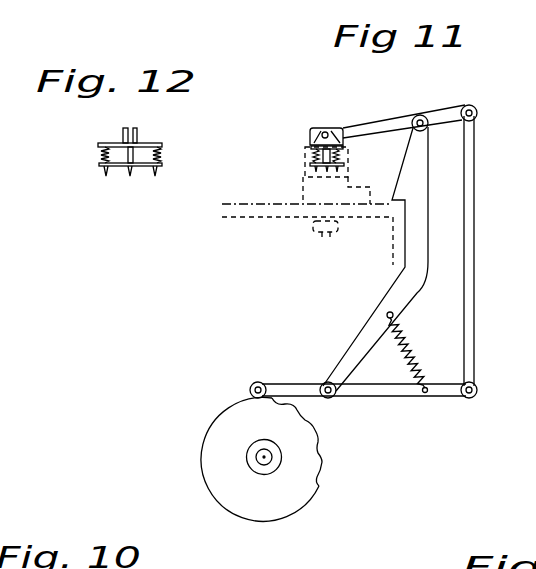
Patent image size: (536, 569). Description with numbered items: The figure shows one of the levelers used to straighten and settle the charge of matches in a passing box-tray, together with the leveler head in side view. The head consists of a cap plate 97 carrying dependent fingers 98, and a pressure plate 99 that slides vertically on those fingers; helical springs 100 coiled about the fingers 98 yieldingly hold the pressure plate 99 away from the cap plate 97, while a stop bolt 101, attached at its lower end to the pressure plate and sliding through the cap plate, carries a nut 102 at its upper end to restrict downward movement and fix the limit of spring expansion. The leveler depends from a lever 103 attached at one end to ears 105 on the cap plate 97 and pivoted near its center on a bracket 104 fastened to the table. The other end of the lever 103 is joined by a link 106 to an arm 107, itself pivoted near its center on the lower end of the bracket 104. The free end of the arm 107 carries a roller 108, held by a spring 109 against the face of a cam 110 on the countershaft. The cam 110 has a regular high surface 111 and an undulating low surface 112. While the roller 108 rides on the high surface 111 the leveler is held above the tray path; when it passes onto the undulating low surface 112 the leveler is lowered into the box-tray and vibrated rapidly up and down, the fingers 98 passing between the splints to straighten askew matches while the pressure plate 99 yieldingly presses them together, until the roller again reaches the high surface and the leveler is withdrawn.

In FIG. 12, the cap plate 97 is at (143, 141).
In FIG. 11, the cap plate 97 is at (339, 131).
In FIG. 12, the fingers 98 is at (130, 174).
In FIG. 11, the fingers 98 is at (338, 171).
In FIG. 12, the pressure plate 99 is at (163, 164).
In FIG. 11, the pressure plate 99 is at (345, 165).
In FIG. 12, the helical springs 100 is at (100, 153).
In FIG. 11, the helical springs 100 is at (312, 152).
In FIG. 11, the stop bolt 101 is at (318, 157).
In FIG. 11, the nut 102 is at (318, 129).
In FIG. 11, the lever 103 is at (447, 118).
In FIG. 11, the bracket 104 is at (398, 287).
In FIG. 12, the ears 105 is at (135, 128).
In FIG. 11, the ears 105 is at (328, 127).
In FIG. 11, the link 106 is at (476, 229).
In FIG. 11, the arm 107 is at (403, 396).
In FIG. 11, the roller 108 is at (258, 383).
In FIG. 11, the spring 109 is at (404, 341).
In FIG. 11, the cam 110 is at (285, 507).
In FIG. 11, the regular high surface 111 is at (222, 509).
In FIG. 11, the undulating low surface 112 is at (318, 433).